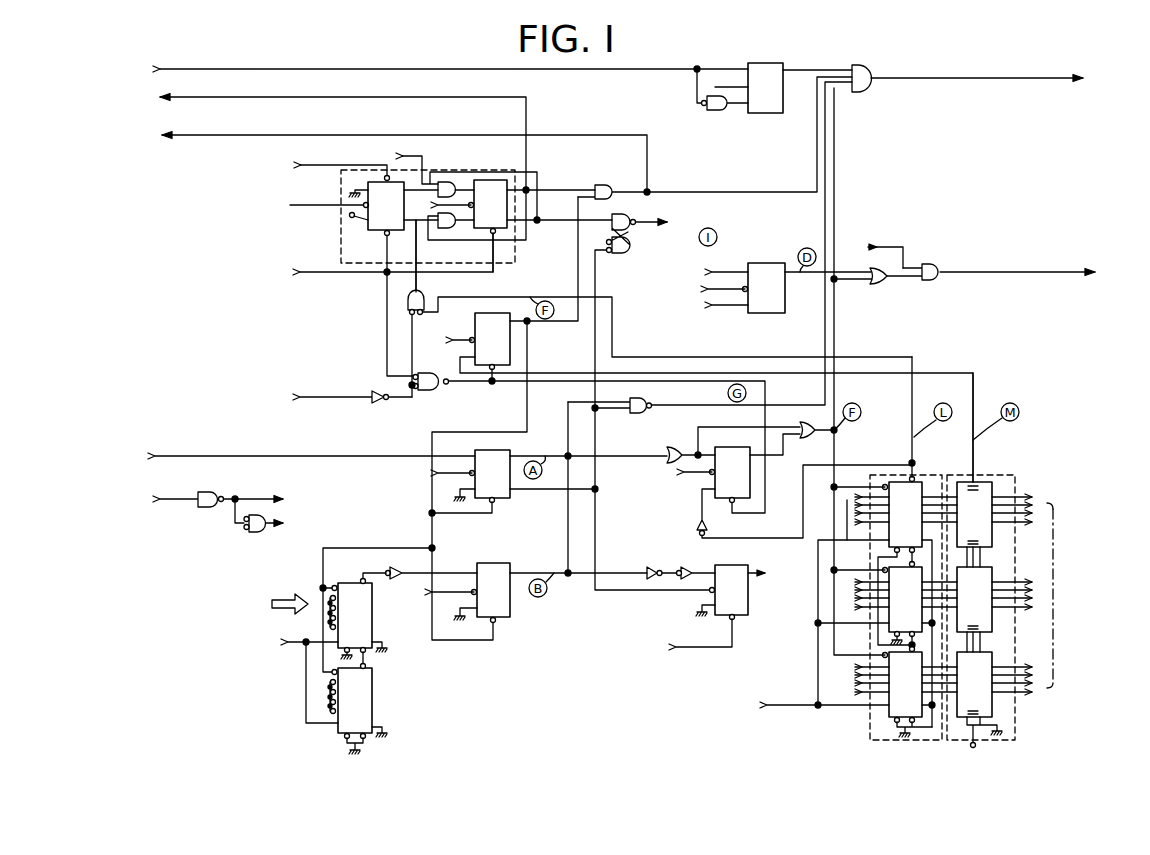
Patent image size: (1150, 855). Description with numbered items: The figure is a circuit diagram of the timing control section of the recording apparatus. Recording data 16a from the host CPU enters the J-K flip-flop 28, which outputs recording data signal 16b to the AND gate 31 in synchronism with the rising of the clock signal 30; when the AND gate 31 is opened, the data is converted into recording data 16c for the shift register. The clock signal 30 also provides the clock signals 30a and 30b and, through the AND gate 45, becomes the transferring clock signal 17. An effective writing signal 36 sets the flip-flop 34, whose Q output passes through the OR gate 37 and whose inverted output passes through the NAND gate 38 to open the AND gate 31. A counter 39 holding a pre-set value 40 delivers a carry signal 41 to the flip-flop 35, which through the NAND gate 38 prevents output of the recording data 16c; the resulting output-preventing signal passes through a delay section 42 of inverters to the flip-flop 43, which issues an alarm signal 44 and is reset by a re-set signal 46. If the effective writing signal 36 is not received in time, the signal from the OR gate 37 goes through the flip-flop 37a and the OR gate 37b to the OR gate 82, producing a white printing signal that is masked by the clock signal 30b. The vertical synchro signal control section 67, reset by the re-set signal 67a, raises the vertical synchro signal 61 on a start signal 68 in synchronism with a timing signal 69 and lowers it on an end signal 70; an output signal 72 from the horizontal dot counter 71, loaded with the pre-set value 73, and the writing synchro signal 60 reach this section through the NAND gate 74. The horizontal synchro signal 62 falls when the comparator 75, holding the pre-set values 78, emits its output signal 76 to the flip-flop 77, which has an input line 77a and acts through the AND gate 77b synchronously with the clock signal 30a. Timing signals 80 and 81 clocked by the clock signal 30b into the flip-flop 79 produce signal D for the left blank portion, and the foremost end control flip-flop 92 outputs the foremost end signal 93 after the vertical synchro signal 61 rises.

The recording data 16a is at (160, 69).
The recording data signal 16b is at (824, 70).
The recording data 16c is at (1083, 78).
The transferring clock signal 17 is at (1095, 265).
The J-K type flip-flop 28 is at (765, 113).
The clock signal 30 is at (160, 499).
The clock signal 30a is at (294, 504).
The clock signal 30b is at (716, 87).
The AND gate 31 is at (873, 68).
The flip-flop 34 is at (497, 502).
The flip-flop 35 is at (502, 563).
The effective writing signal 36 is at (148, 457).
The OR gate 37 is at (674, 448).
The flip-flop 37a is at (804, 481).
The OR gate 37b is at (812, 439).
The NAND gate 38 is at (656, 392).
The counter 39 is at (377, 667).
The pre-set value 40 is at (280, 593).
The carry signal 41 is at (374, 572).
The delay section 42 is at (668, 561).
The flip-flop 43 is at (740, 561).
The alarm signal 44 is at (769, 573).
The AND gate 45 is at (930, 264).
The re-set signal 46 is at (674, 646).
The writing synchro signal 60 is at (300, 397).
The vertical synchro signal 61 is at (179, 102).
The horizontal synchro signal 62 is at (207, 138).
The vertical synchro signal control section 67 is at (341, 250).
The re-set signal 67a is at (366, 260).
The start signal 68 is at (300, 165).
The timing signal 69 is at (401, 156).
The end signal 70 is at (290, 205).
The horizontal dot counter 71 is at (934, 473).
The output signal 72 is at (937, 417).
The pre-set value 73 is at (855, 678).
The NAND gate 74 is at (408, 300).
The comparator 75 is at (1015, 475).
The output signal 76 is at (1000, 427).
The flip-flop 77 is at (496, 313).
The clock input line 77a is at (450, 340).
The AND gate 77b is at (602, 185).
The pre-set values 78 is at (1055, 620).
The flip-flop 79 is at (768, 263).
The timing signal 80 is at (705, 270).
The timing signal 81 is at (705, 305).
The OR gate 82 is at (877, 286).
The foremost end control flip-flop 92 is at (482, 180).
The foremost end signal 93 is at (678, 222).